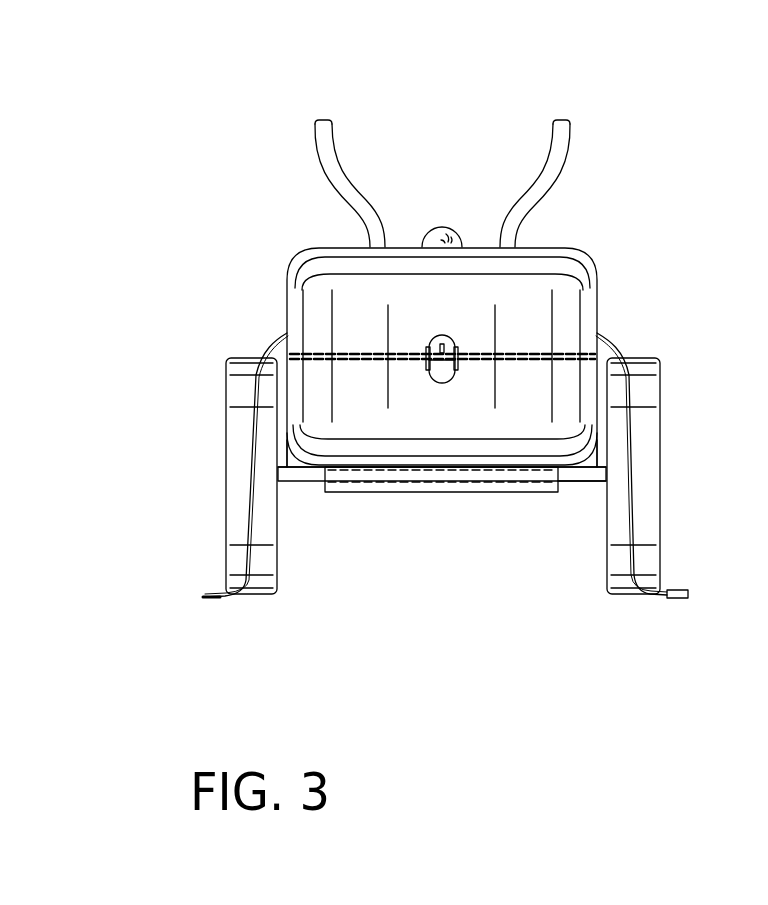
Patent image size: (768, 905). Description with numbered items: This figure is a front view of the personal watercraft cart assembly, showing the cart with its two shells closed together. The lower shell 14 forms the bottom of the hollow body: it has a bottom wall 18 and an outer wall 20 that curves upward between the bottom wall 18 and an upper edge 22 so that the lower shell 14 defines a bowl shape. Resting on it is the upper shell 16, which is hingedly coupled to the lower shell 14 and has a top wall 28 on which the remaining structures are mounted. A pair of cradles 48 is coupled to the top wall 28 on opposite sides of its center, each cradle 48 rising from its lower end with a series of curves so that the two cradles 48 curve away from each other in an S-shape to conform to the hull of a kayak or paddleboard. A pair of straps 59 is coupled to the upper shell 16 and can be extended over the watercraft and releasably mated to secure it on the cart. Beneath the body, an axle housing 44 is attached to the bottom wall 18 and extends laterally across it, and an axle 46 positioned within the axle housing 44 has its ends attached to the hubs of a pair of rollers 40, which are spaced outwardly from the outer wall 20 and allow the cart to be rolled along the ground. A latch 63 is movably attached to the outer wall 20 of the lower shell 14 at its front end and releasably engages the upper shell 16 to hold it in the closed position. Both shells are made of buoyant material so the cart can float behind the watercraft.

The lower shell 14 is at (290, 467).
The upper shell 16 is at (296, 243).
The bottom wall 18 is at (508, 468).
The outer wall 20 is at (405, 413).
The upper edge 22 is at (543, 353).
The top wall 28 is at (405, 247).
The rollers 40 is at (235, 358).
The axle housing 44 is at (438, 492).
The axle 46 is at (580, 483).
The cradles 48 is at (311, 127).
The straps 59 is at (250, 423).
The latch 63 is at (452, 343).